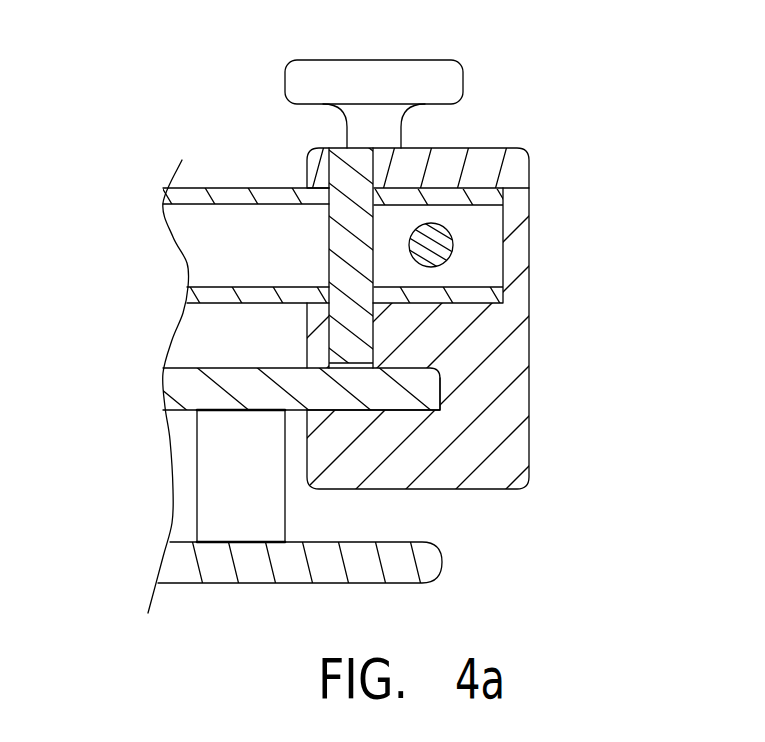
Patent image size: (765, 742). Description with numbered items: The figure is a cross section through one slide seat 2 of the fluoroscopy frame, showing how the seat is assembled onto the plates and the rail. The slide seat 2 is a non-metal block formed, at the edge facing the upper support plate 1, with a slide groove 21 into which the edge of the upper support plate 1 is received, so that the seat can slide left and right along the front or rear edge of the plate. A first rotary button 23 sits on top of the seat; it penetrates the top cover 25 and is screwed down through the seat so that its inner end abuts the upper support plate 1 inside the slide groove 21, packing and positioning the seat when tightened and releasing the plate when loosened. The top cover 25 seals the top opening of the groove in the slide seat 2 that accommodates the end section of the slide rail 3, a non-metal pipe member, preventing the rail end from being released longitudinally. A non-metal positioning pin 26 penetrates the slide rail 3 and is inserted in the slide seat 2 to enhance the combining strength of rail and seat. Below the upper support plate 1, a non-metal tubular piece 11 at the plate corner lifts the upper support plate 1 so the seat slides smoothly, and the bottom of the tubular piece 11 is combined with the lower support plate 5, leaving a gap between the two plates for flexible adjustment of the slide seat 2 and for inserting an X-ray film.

The upper support plate 1 is at (188, 395).
The slide seat 2 is at (513, 352).
The slide rail 3 is at (230, 193).
The lower support plate 5 is at (187, 568).
The tubular piece 11 is at (220, 480).
The slide groove 21 is at (400, 412).
The first rotary button 23 is at (447, 82).
The top cover 25 is at (517, 173).
The positioning pin 26 is at (437, 243).